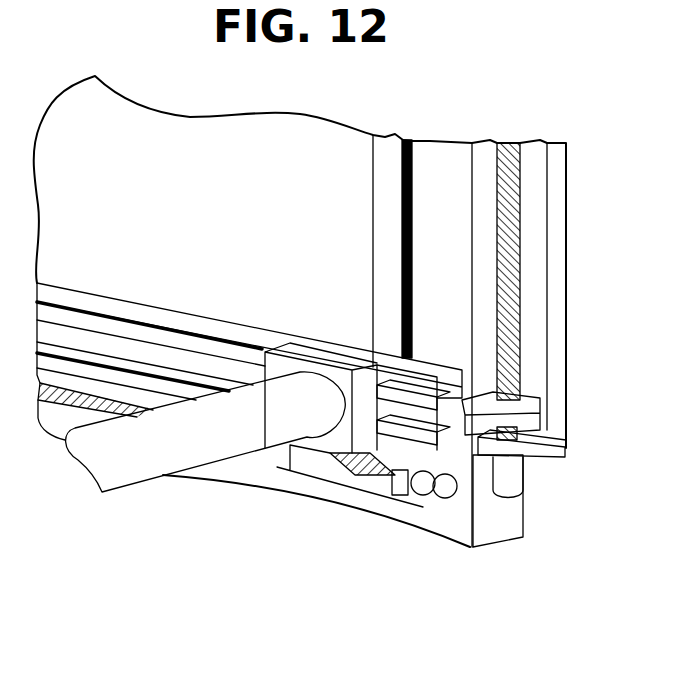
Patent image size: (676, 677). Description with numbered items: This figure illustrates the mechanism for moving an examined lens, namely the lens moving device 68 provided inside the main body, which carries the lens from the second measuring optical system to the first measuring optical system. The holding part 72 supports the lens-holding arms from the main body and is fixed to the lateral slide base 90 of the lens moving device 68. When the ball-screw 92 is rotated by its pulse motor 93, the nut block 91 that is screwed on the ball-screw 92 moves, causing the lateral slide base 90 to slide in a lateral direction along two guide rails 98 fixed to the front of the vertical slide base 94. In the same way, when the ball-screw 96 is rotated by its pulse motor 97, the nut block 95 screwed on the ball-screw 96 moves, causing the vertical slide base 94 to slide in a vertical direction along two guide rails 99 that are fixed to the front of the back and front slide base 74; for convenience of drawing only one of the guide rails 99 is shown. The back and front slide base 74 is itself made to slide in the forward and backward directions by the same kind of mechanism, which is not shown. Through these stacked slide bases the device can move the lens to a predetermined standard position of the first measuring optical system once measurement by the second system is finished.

The lens moving device 68 is at (485, 565).
The holding part 72 is at (132, 457).
The back and front slide base 74 is at (490, 522).
The lateral slide base 90 is at (327, 440).
The nut block 91 is at (285, 458).
The ball-screw 92 is at (365, 477).
The pulse motor 93 is at (423, 497).
The vertical slide base 94 is at (423, 366).
The nut block 95 is at (510, 417).
The ball-screw 96 is at (437, 384).
The pulse motor 97 is at (512, 482).
The guide rails 98 is at (433, 389).
The guide rails 99 is at (385, 252).